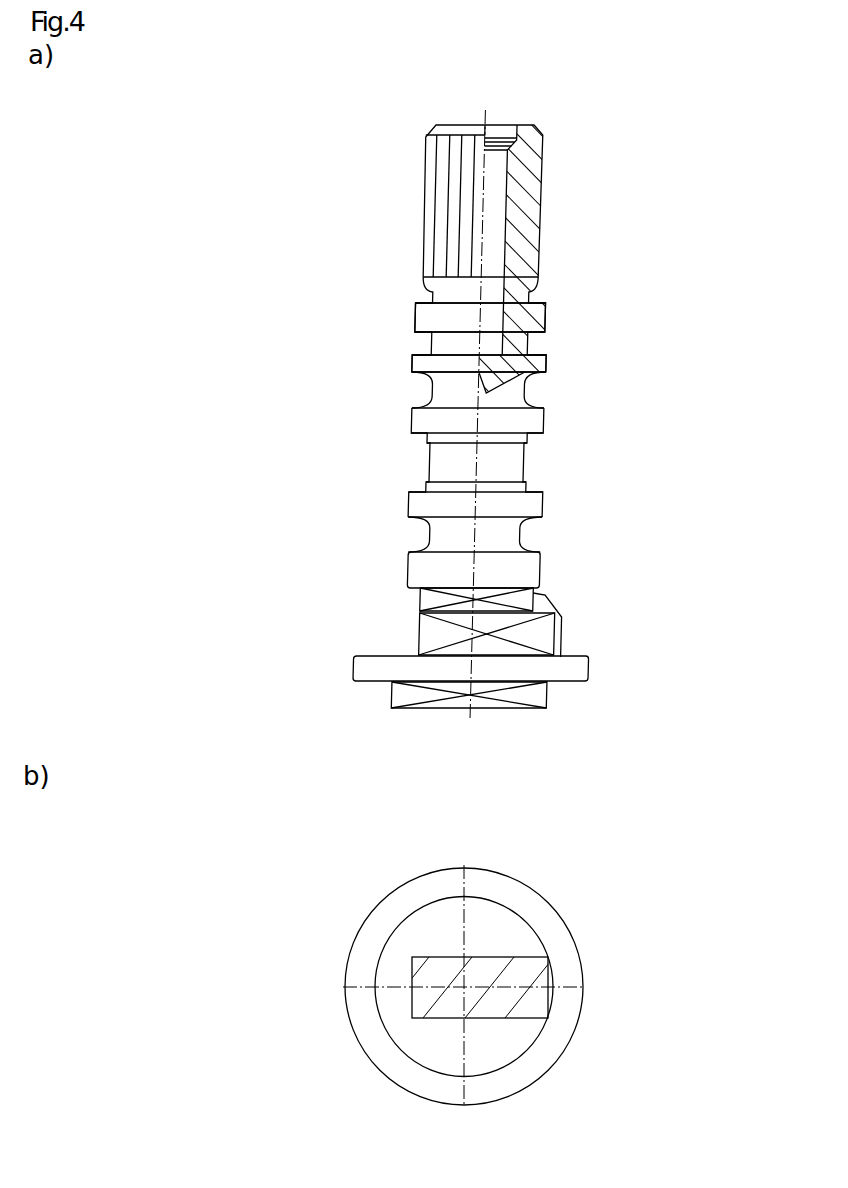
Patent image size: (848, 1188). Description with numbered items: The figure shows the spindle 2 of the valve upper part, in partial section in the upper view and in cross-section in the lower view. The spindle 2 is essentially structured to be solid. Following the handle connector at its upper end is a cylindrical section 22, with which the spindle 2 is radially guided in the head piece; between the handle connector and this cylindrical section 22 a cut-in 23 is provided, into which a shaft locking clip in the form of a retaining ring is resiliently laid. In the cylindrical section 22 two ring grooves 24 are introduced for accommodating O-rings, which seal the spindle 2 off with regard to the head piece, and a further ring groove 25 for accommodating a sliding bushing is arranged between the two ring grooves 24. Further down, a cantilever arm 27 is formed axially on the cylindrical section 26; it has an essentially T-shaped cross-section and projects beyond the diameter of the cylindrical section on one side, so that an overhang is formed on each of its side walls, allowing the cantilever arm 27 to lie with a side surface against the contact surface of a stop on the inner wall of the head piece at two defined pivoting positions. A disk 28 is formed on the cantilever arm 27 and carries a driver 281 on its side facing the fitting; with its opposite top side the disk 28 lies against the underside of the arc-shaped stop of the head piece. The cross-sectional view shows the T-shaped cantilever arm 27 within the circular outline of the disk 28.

The spindle 2 is at (626, 88).
The cylindrical section 22 is at (547, 361).
The cut-in 23 is at (540, 343).
The ring grooves 24 is at (423, 392).
The further ring groove 25 is at (532, 463).
The cylindrical section 26 is at (540, 573).
The cantilever arm 27 is at (565, 630).
The disk 28 is at (590, 672).
The driver 281 is at (393, 693).